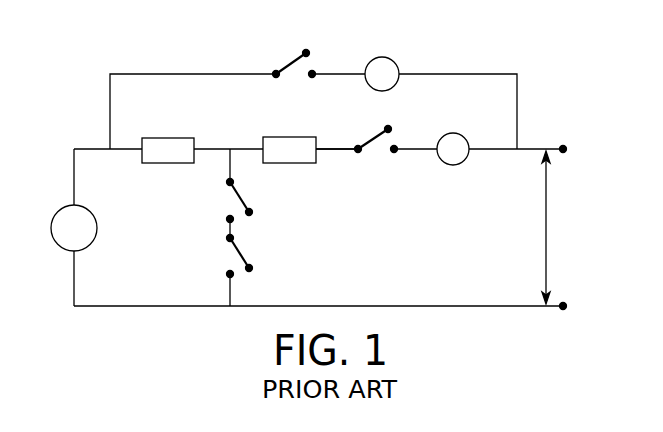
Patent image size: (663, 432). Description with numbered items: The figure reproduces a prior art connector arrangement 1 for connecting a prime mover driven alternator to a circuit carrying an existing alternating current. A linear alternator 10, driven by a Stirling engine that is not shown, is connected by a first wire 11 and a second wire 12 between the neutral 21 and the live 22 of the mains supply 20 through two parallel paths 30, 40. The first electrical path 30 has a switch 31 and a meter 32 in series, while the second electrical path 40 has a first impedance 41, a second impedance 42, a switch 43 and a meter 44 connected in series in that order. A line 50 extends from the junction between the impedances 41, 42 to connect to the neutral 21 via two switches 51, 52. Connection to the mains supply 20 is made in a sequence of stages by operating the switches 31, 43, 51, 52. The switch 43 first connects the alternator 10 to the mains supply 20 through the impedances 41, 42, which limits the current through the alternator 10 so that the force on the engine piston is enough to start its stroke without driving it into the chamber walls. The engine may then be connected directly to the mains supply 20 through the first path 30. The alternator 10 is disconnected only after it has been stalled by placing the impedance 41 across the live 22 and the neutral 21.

The prior art circuit 1 is at (122, 329).
The linear alternator 10 is at (74, 228).
The first wire 11 is at (74, 278).
The second wire 12 is at (74, 172).
The mains supply 20 is at (548, 230).
The neutral 21 is at (566, 308).
The live 22 is at (566, 146).
The first electrical path 30 is at (91, 90).
The switch 31 is at (300, 54).
The meter 32 is at (395, 60).
The second electrical path 40 is at (347, 161).
The first impedance 41 is at (170, 138).
The second impedance 42 is at (285, 137).
The switch 43 is at (377, 133).
The meter 44 is at (466, 161).
The line 50 is at (239, 227).
The switch 51 is at (238, 193).
The switch 52 is at (239, 255).